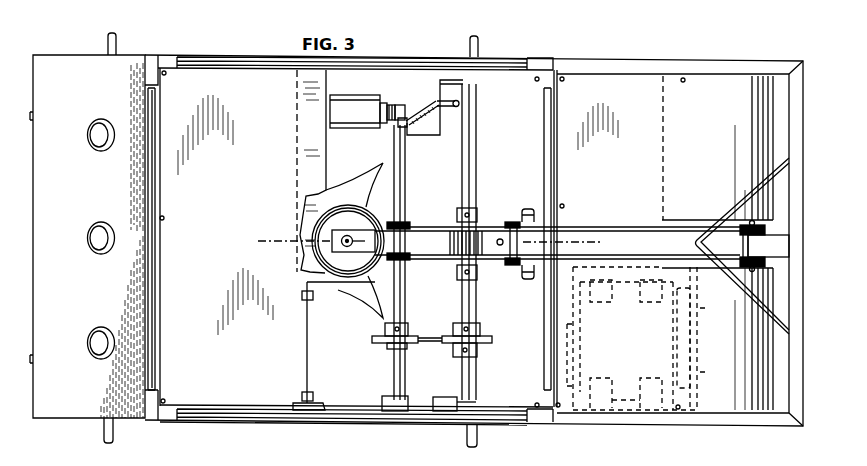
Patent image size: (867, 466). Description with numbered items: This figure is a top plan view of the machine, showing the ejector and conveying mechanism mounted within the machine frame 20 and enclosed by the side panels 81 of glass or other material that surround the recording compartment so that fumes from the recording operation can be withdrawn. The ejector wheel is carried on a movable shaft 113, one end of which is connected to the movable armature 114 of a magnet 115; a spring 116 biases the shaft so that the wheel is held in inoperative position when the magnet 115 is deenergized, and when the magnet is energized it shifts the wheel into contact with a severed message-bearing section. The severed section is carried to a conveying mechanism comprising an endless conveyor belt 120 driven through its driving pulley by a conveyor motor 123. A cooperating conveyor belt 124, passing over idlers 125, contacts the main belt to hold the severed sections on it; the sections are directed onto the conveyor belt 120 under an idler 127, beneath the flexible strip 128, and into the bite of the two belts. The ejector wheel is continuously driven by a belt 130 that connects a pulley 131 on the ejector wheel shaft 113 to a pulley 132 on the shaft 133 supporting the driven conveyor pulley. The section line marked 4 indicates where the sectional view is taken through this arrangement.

The section line 4- 4 is at (273, 222).
The machine frame 20 is at (358, 421).
The side panels 81 is at (548, 104).
The movable shaft 113 is at (397, 377).
The movable armature 114 is at (387, 104).
The magnet 115 is at (347, 108).
The spring 116 is at (421, 114).
The endless conveyor belt 120 is at (622, 242).
The conveyor motor 123 is at (625, 411).
The cooperating conveyor belt 124 is at (642, 228).
The idlers 125 is at (494, 232).
The idler 127 is at (404, 253).
The flexible strip 128 is at (332, 223).
The belt 130 is at (430, 336).
The pulley 131 is at (380, 330).
The pulley 132 is at (485, 333).
The shaft 133 is at (469, 301).